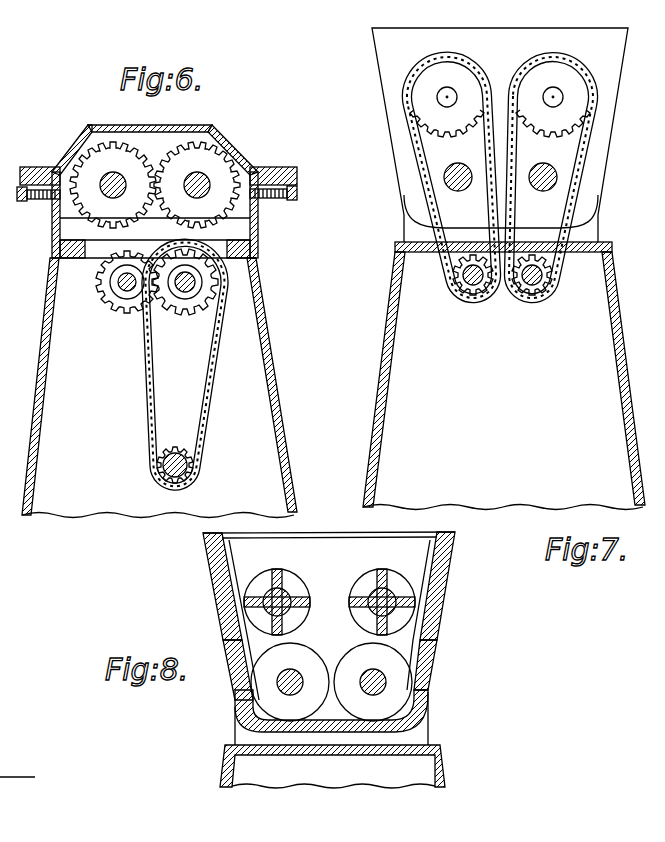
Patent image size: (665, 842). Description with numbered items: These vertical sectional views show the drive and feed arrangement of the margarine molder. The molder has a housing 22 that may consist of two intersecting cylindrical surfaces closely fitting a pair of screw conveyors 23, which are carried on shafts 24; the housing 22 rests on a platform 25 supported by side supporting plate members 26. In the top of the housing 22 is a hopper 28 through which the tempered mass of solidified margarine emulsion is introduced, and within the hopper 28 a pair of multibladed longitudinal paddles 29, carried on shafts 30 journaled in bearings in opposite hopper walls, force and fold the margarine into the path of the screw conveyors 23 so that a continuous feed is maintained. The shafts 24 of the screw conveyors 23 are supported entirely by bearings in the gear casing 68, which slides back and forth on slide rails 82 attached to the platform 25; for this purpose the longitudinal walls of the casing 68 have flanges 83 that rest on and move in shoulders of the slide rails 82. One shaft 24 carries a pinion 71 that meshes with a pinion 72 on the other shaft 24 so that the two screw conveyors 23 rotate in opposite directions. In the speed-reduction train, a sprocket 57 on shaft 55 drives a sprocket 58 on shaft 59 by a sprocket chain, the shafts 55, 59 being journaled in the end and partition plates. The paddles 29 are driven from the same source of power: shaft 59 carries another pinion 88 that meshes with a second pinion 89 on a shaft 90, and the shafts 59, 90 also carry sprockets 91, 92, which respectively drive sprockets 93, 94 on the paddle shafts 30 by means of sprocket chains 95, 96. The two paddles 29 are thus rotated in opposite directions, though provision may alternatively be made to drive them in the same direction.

In FIG. 8, the housing 22 is at (428, 685).
In FIG. 8, the screw conveyors 23 is at (258, 692).
In FIG. 6, the shafts 24 is at (115, 178).
In FIG. 7, the shafts 24 is at (460, 192).
In FIG. 8, the shafts 24 is at (367, 667).
In FIG. 7, the platform 25 is at (590, 243).
In FIG. 8, the platform 25 is at (330, 748).
In FIG. 6, the side supporting plate members 26 is at (44, 334).
In FIG. 7, the side supporting plate members 26 is at (388, 322).
In FIG. 7, the hopper 28 is at (387, 58).
In FIG. 8, the hopper 28 is at (447, 566).
In FIG. 8, the multibladed longitudinal paddles 29 is at (282, 574).
In FIG. 7, the shafts 30 is at (543, 92).
In FIG. 8, the shafts 30 is at (368, 598).
In FIG. 6, the shaft 55 is at (190, 465).
In FIG. 6, the sprocket 57 is at (174, 444).
In FIG. 6, the sprocket 58 is at (183, 318).
In FIG. 6, the shaft 59 is at (202, 286).
In FIG. 7, the shaft 59 is at (532, 285).
In FIG. 6, the gear casing 68 is at (177, 126).
In FIG. 6, the pinion 71 is at (227, 163).
In FIG. 6, the pinion 72 is at (97, 155).
In FIG. 6, the slide rails 82 is at (53, 229).
In FIG. 6, the flanges 83 is at (52, 167).
In FIG. 6, the pinion 88 is at (258, 268).
In FIG. 6, the pinion 89 is at (107, 294).
In FIG. 6, the shaft 90 is at (125, 287).
In FIG. 7, the shaft 90 is at (470, 285).
In FIG. 7, the sprocket 91 is at (547, 281).
In FIG. 7, the sprocket 92 is at (457, 281).
In FIG. 7, the sprocket 93 is at (554, 132).
In FIG. 7, the sprocket 94 is at (455, 130).
In FIG. 7, the sprocket chain 95 is at (586, 162).
In FIG. 7, the sprocket chain 96 is at (418, 173).